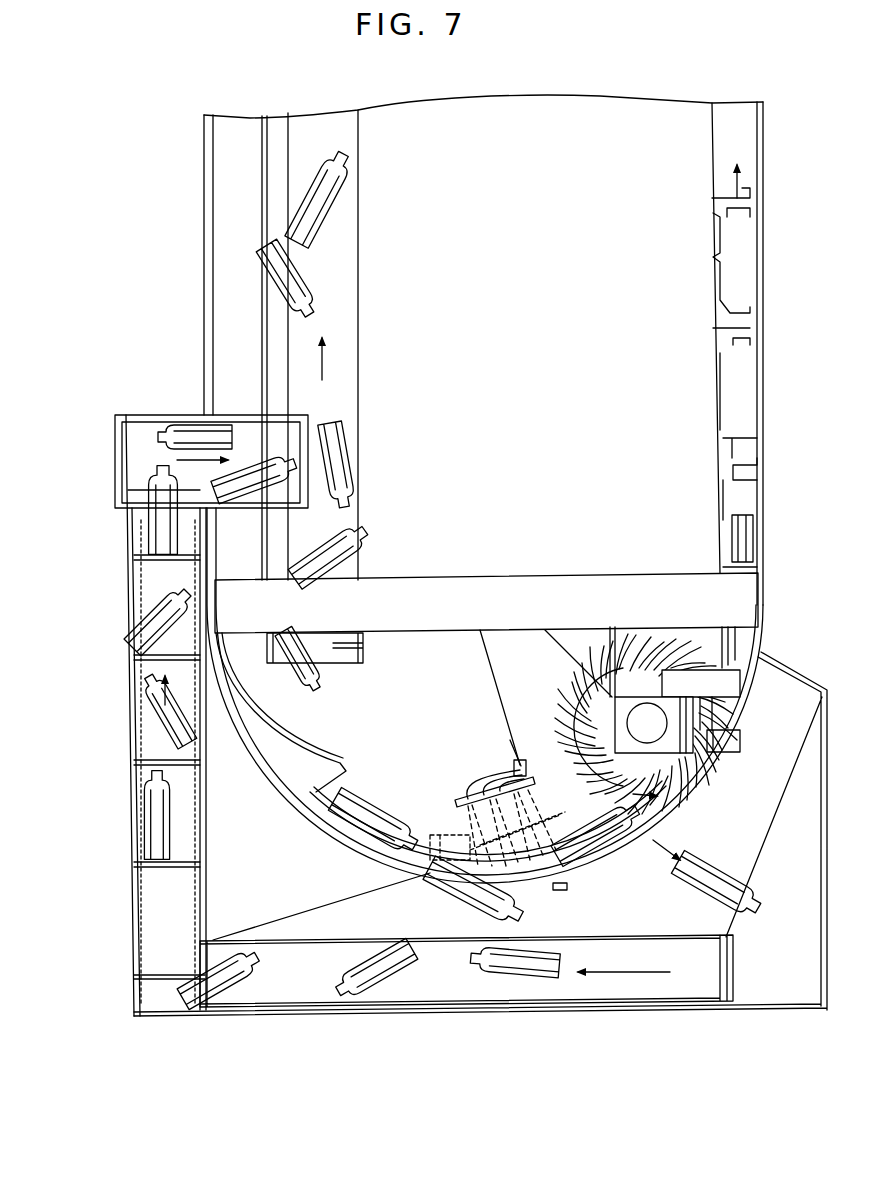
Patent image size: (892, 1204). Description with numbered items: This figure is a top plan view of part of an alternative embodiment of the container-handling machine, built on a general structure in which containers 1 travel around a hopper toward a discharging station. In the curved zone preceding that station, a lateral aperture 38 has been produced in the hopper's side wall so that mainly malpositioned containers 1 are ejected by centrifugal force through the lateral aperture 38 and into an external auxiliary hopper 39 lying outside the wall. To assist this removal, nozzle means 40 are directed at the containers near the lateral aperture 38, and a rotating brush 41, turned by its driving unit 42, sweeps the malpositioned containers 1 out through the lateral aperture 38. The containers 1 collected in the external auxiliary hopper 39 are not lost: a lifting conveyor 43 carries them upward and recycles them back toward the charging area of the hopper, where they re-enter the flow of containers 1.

The containers 1 is at (398, 836).
The lateral aperture 38 is at (603, 862).
The external auxiliary hopper 39 is at (246, 990).
The nozzle means 40 is at (452, 788).
The rotating brush 41 is at (707, 767).
The driving unit 42 is at (741, 741).
The lifting conveyor 43 is at (140, 582).